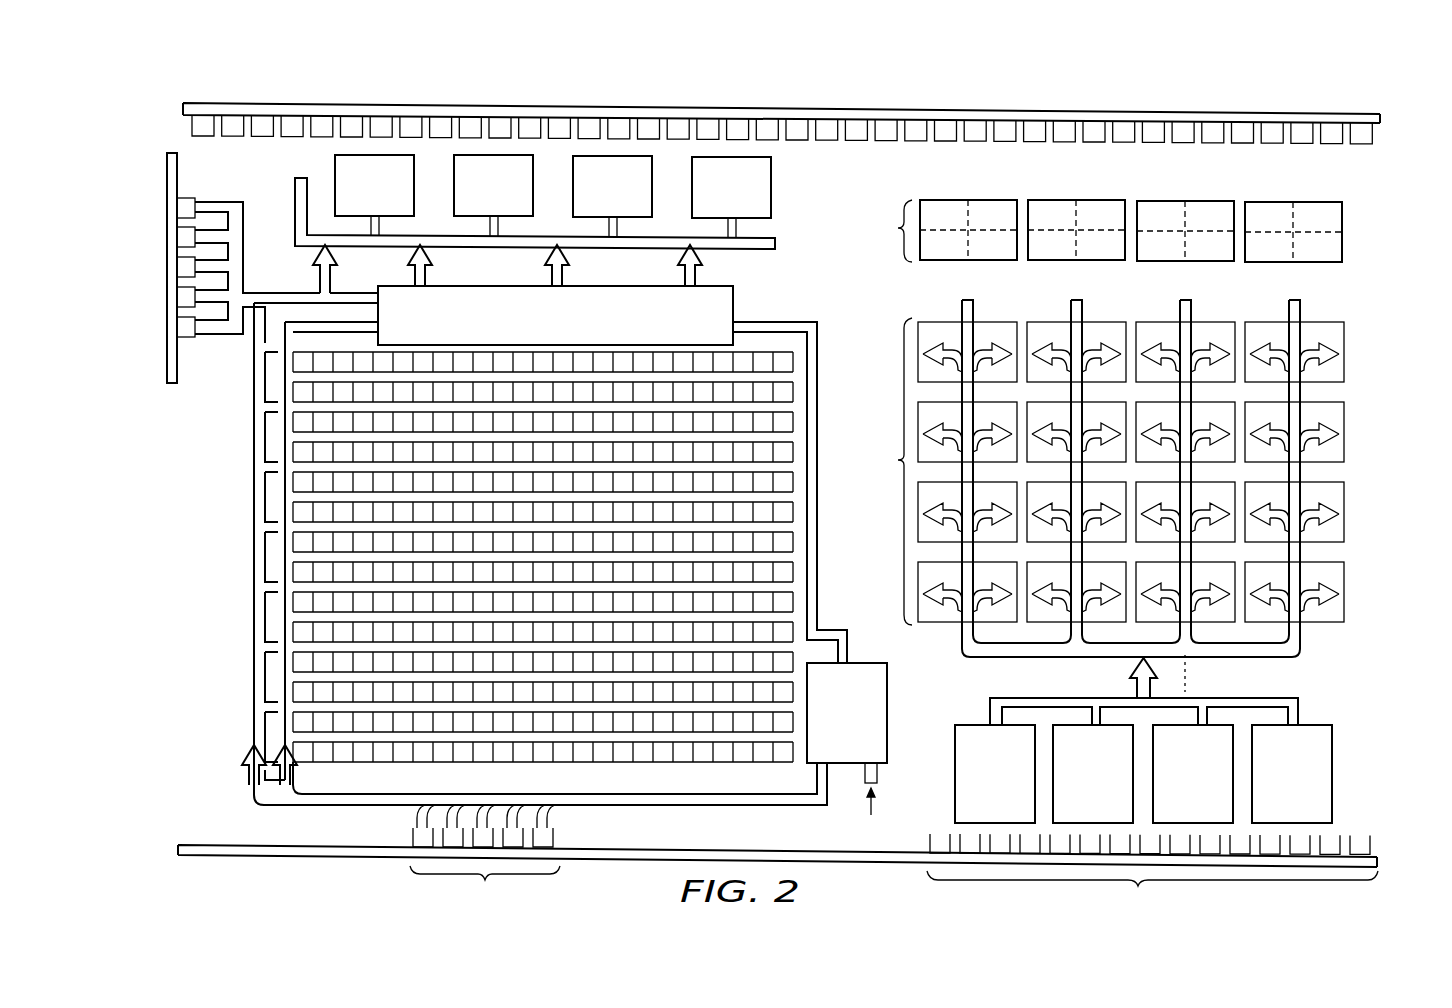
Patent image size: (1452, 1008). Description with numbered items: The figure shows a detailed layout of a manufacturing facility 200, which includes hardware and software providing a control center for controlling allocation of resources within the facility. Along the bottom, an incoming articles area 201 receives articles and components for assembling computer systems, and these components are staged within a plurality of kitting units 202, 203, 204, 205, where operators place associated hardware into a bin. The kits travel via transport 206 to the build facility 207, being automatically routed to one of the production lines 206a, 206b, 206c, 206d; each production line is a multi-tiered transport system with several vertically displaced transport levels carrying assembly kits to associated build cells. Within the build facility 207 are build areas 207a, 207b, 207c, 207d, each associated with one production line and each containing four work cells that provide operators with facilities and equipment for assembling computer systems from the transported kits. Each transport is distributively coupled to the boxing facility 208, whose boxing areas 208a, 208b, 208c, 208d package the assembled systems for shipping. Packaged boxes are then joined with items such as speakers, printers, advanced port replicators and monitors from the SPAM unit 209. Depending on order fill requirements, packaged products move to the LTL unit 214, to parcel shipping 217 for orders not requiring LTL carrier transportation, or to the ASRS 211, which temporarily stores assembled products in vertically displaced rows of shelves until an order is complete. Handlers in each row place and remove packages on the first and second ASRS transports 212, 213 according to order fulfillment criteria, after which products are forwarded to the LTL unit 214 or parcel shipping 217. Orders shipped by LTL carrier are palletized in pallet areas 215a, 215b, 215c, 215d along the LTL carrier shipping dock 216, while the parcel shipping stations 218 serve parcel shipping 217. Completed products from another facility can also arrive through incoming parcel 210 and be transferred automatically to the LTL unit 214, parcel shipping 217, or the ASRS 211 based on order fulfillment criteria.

The manufacturing facility 200 is at (210, 669).
The incoming articles area 201 is at (940, 833).
The kitting unit 202 is at (977, 817).
The kitting unit 203 is at (1075, 817).
The kitting unit 204 is at (1175, 817).
The kitting unit 205 is at (1274, 817).
The transport 206 is at (988, 700).
The production line 206a is at (978, 642).
The production line 206b is at (1088, 642).
The production line 206c is at (1198, 642).
The production line 206d is at (1301, 654).
The build facility 207 is at (1123, 462).
The build area 207a is at (1345, 605).
The build area 207b is at (1345, 525).
The build area 207c is at (1345, 425).
The build area 207d is at (1345, 345).
The boxing facility 208 is at (1084, 207).
The boxing area 208a is at (958, 200).
The boxing area 208b is at (1066, 200).
The boxing area 208c is at (1197, 201).
The boxing area 208d is at (1307, 202).
The SPAM unit 209 is at (829, 757).
The incoming parcel 210 is at (560, 839).
The ASRS 211 is at (727, 722).
The first ASRS transport 212 is at (248, 790).
The second ASRS transport 213 is at (300, 786).
The LTL unit 214 is at (737, 298).
The pallet area 215a is at (353, 197).
The pallet area 215b is at (472, 197).
The pallet area 215c is at (591, 198).
The pallet area 215d is at (710, 199).
The LTL carrier shipping dock 216 is at (1375, 126).
The parcel shipping 217 is at (188, 373).
The parcel shipping stations 218 is at (221, 198).